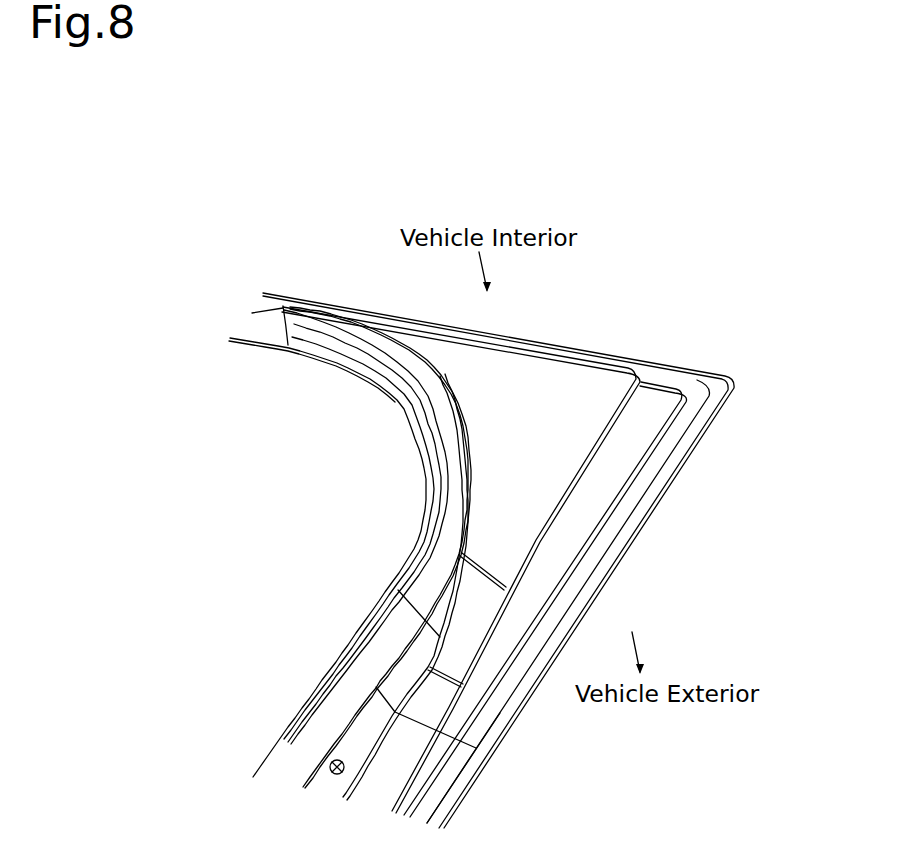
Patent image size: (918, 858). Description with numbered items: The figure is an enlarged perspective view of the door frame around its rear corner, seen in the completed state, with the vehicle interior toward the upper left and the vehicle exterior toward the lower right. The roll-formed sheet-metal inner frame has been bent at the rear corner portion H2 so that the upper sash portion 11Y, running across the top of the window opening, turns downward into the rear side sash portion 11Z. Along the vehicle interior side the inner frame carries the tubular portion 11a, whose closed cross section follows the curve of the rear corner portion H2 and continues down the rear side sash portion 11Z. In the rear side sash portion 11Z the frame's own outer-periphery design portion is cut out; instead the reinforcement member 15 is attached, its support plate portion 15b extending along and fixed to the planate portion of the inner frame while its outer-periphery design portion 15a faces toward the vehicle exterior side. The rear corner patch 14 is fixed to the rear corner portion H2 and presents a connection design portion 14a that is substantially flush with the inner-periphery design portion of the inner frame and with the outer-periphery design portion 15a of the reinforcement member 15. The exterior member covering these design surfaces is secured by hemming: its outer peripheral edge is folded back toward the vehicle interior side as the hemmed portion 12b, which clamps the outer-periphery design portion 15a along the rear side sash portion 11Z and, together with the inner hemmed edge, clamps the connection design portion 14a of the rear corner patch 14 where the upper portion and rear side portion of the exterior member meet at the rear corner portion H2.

The upper sash portion 11Y is at (239, 355).
The rear side sash portion 11Z is at (310, 673).
The tubular portion 11a is at (396, 402).
The rear corner portion H2 is at (403, 456).
The hemmed portion 12b is at (677, 369).
The rear corner patch 14 is at (563, 393).
The connection design portion 14a is at (660, 453).
The reinforcement member 15 is at (410, 747).
The outer-periphery design portion 15a is at (450, 790).
The support plate portion 15b is at (347, 749).